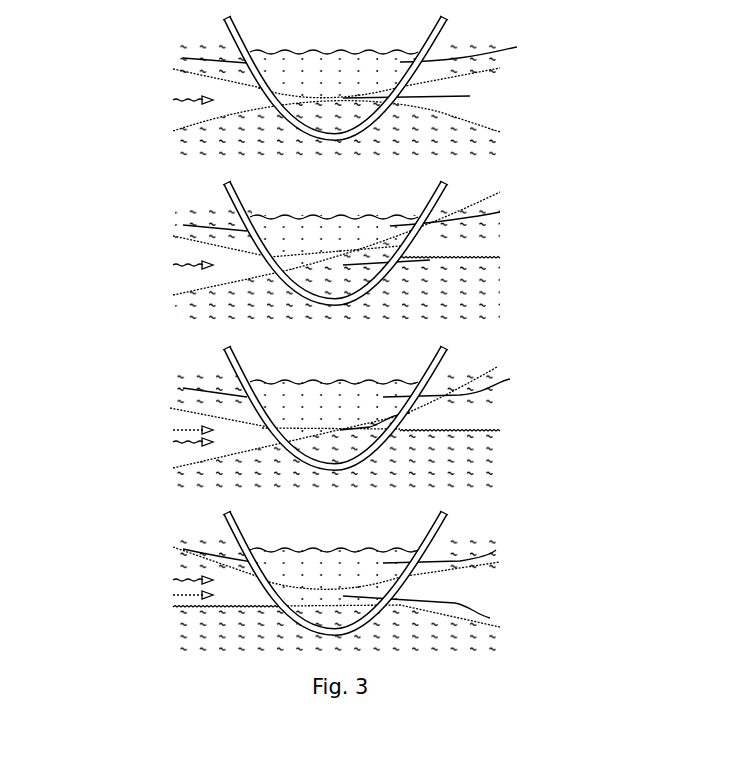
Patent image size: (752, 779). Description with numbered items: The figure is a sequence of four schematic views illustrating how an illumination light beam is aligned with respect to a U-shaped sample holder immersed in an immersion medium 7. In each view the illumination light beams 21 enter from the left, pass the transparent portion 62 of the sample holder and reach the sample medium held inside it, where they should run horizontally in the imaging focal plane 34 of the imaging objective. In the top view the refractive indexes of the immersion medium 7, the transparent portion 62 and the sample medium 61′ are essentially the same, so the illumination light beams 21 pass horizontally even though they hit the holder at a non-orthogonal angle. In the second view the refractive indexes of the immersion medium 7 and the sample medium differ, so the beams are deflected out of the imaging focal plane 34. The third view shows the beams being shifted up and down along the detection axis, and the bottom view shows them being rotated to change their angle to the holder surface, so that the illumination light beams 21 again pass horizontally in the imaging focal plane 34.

The immersion medium 7 is at (180, 146).
The illumination light beams 21 is at (187, 86).
The transparent portion of the sample holder 62 is at (183, 58).
The sample medium 61′ is at (517, 47).
The imaging focal plane 34 is at (470, 96).